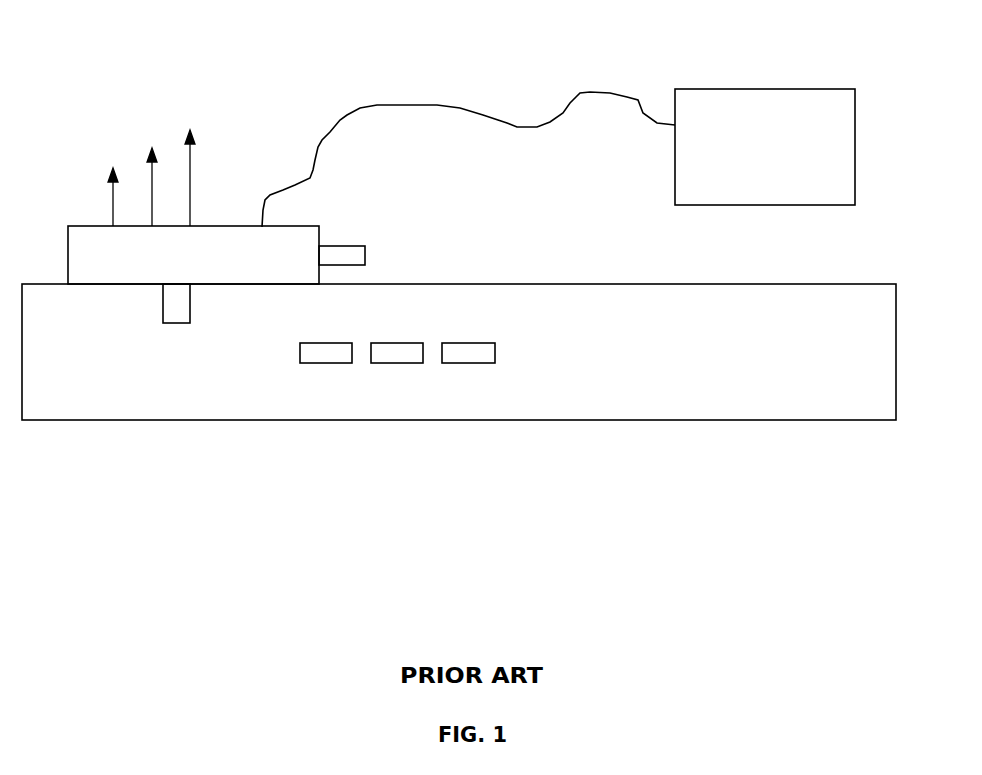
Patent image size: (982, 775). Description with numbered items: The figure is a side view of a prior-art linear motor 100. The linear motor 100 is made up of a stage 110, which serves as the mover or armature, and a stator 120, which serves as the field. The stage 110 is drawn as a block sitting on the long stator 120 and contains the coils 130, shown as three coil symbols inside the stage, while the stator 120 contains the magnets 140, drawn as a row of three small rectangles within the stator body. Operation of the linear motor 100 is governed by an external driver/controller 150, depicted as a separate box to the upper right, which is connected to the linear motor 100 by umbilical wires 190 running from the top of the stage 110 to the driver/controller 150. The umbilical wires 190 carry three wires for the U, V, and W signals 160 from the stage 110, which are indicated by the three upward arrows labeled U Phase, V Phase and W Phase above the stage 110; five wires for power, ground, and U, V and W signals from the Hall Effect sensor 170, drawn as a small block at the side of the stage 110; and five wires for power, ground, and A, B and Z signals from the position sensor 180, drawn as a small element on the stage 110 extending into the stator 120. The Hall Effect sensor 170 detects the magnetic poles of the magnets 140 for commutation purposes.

The linear motor 100 is at (468, 47).
The stage 110 is at (287, 245).
The stator 120 is at (733, 400).
The coils 130 is at (202, 245).
The magnets 140 is at (457, 363).
The driver/controller 150 is at (830, 108).
The U, V, and W signals 160 is at (113, 144).
The Hall Effect sensor 170 is at (353, 243).
The position sensor 180 is at (177, 325).
The umbilical wires 190 is at (590, 88).